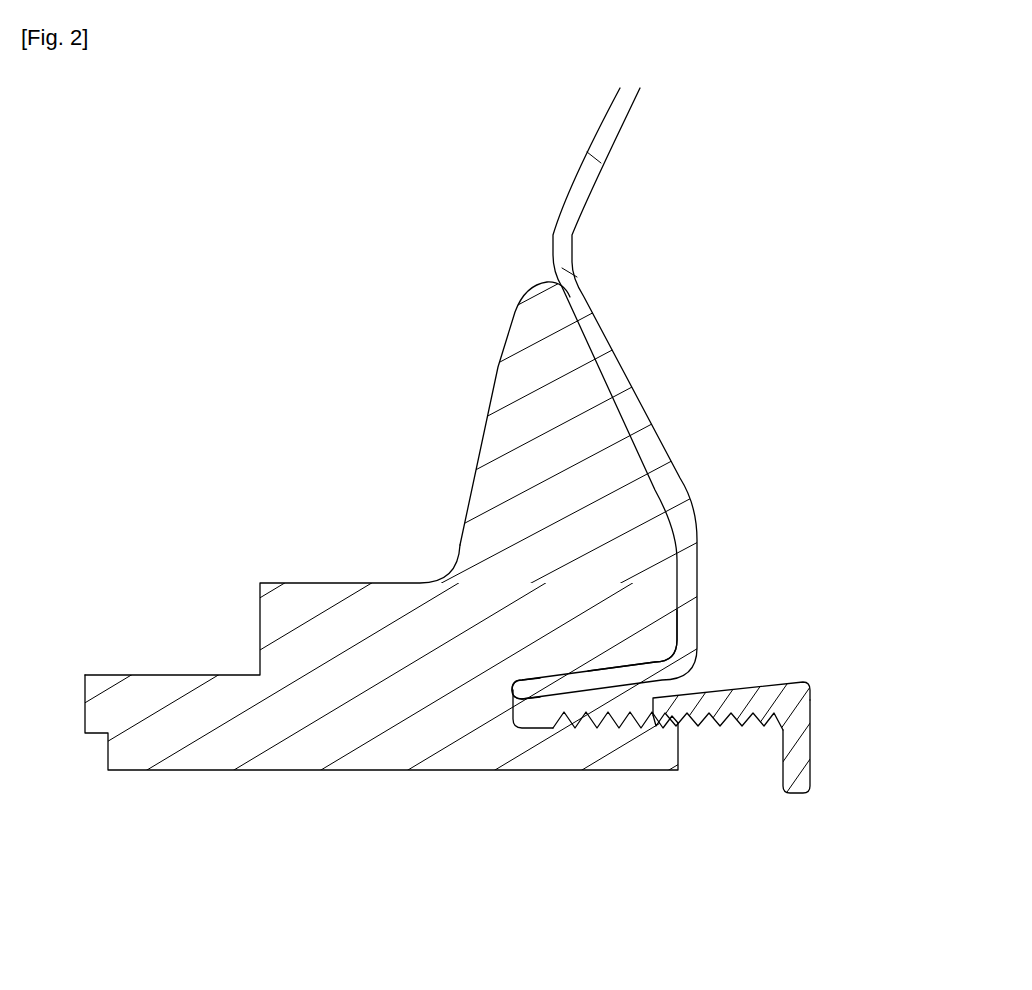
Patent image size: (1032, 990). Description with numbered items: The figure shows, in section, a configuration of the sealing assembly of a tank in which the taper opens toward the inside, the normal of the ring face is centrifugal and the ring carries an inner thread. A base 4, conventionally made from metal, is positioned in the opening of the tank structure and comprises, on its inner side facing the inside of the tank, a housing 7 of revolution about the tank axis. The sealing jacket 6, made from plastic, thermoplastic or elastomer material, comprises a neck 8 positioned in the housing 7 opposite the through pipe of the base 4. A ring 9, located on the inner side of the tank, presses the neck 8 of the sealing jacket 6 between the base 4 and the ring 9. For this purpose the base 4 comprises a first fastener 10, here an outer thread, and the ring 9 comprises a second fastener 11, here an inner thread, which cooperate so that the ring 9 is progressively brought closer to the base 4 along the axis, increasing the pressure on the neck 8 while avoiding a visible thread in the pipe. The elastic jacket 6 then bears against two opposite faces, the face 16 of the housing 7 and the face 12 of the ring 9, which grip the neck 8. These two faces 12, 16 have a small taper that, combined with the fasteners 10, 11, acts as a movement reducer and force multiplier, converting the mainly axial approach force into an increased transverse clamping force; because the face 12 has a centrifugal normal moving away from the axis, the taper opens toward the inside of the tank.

The base 4 is at (148, 698).
The sealing jacket 6 is at (602, 337).
The housing 7 is at (540, 710).
The neck 8 is at (588, 673).
The ring 9 is at (797, 770).
The first fastener 10 is at (597, 730).
The second fastener 11 is at (725, 725).
The face of the ring 12 is at (755, 683).
The face of the housing 16 is at (566, 693).